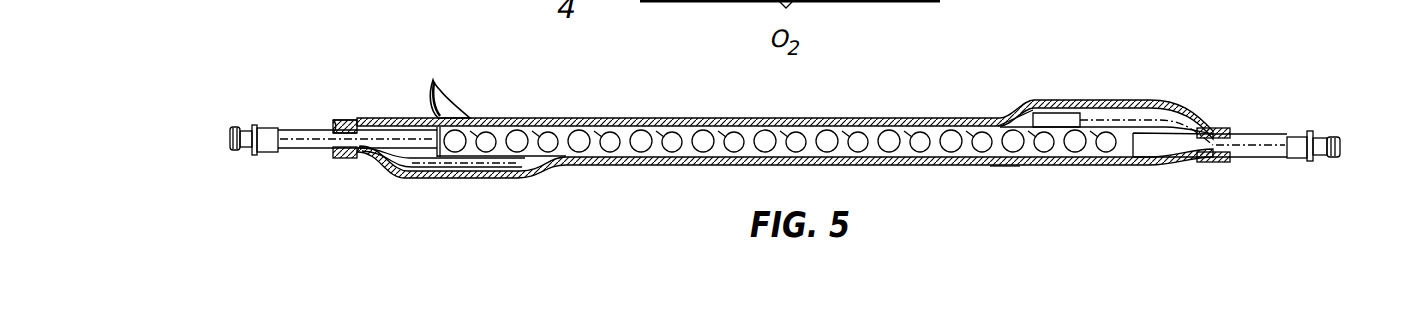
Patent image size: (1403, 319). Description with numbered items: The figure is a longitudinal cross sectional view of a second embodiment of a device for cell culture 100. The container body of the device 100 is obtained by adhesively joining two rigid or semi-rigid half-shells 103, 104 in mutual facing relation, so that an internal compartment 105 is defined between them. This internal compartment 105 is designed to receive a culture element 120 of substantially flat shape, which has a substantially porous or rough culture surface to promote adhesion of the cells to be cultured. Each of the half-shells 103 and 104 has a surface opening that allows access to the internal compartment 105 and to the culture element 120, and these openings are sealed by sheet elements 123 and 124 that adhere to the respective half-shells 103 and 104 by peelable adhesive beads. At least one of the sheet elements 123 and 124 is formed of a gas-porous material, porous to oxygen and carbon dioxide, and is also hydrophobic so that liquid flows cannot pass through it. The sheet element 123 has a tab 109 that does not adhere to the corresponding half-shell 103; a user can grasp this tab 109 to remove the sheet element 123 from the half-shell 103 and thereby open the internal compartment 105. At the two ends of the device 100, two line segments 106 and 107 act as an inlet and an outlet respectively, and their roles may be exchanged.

The device for cell culture 100 is at (1168, 78).
The half-shell 103 is at (615, 117).
The half-shell 104 is at (650, 166).
The internal compartment 105 is at (418, 147).
The line segment 106 is at (308, 133).
The line segment 107 is at (1265, 147).
The tab 109 is at (433, 83).
The culture element 120 is at (497, 140).
The sheet element 123 is at (993, 120).
The sheet element 124 is at (1000, 168).